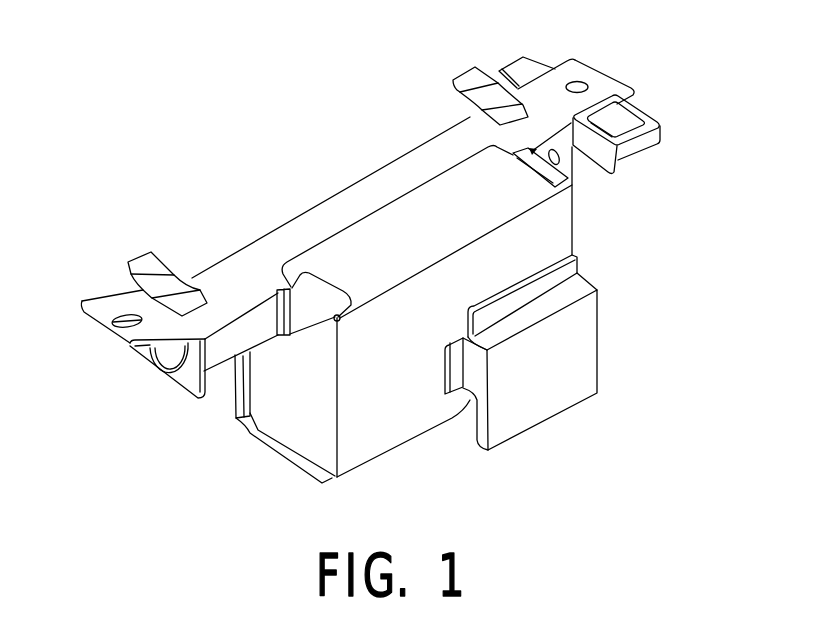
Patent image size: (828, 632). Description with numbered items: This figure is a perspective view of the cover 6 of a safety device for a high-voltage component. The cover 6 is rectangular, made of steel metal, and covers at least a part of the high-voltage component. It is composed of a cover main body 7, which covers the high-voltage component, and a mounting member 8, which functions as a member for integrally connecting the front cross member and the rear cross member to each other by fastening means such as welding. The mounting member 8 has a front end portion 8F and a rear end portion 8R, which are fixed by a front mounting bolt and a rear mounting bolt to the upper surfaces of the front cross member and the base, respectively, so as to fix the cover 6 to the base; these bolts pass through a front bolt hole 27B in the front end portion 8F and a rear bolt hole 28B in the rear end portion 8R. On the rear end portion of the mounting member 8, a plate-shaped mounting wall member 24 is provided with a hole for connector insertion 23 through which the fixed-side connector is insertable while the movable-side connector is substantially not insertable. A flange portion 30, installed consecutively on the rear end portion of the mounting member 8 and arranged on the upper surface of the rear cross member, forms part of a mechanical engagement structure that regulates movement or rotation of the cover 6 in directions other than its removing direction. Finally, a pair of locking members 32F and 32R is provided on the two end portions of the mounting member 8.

The cover 6 is at (343, 138).
The cover main body 7 is at (400, 428).
The mounting member 8 is at (271, 241).
The front end portion of the mounting member 8F is at (155, 331).
The rear end portion of the mounting member 8R is at (616, 87).
The hole for connector insertion 23 is at (610, 122).
The plate-shaped mounting wall member 24 is at (649, 115).
The front bolt hole 27B is at (130, 323).
The rear bolt hole 28B is at (580, 84).
The flange portion 30 is at (530, 62).
The front locking member 32F is at (146, 262).
The rear locking member 32R is at (470, 73).